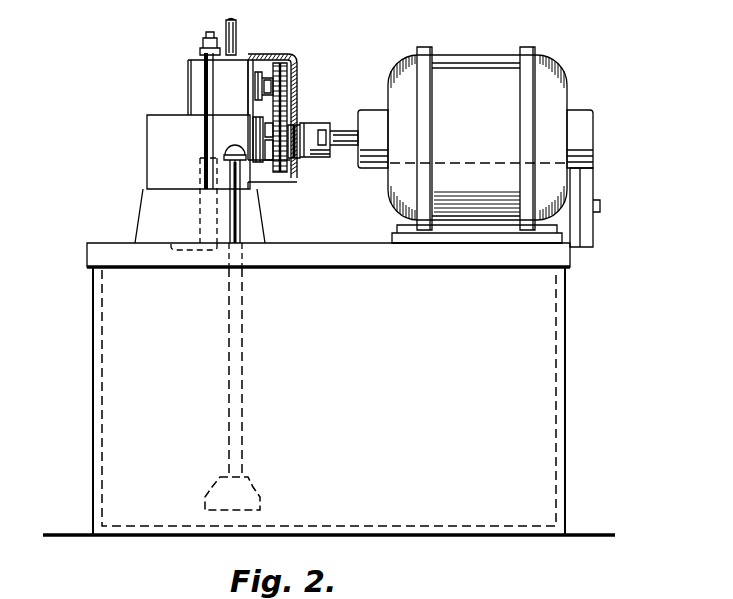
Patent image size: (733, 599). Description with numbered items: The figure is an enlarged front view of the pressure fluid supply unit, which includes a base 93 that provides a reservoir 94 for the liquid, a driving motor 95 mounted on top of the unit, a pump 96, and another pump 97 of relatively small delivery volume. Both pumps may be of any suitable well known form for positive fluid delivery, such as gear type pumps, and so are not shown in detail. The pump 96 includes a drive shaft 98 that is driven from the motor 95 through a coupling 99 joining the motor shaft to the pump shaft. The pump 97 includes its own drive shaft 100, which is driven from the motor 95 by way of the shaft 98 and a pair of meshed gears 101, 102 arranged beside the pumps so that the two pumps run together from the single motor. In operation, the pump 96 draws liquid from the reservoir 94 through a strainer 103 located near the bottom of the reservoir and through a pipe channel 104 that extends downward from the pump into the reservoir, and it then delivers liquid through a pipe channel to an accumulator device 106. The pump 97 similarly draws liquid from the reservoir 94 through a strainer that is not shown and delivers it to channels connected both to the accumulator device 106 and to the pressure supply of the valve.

The base 93 is at (83, 366).
The reservoir 94 is at (140, 438).
The driving motor 95 is at (479, 147).
The pump 96 is at (155, 155).
The pump 97 is at (195, 84).
The drive shaft 98 is at (260, 178).
The coupling 99 is at (314, 123).
The drive shaft 100 is at (271, 78).
The meshed gear 101 is at (283, 176).
The meshed gear 102 is at (288, 80).
The strainer 103 is at (247, 497).
The pipe channel 104 is at (242, 374).
The accumulator device 106 is at (356, 218).